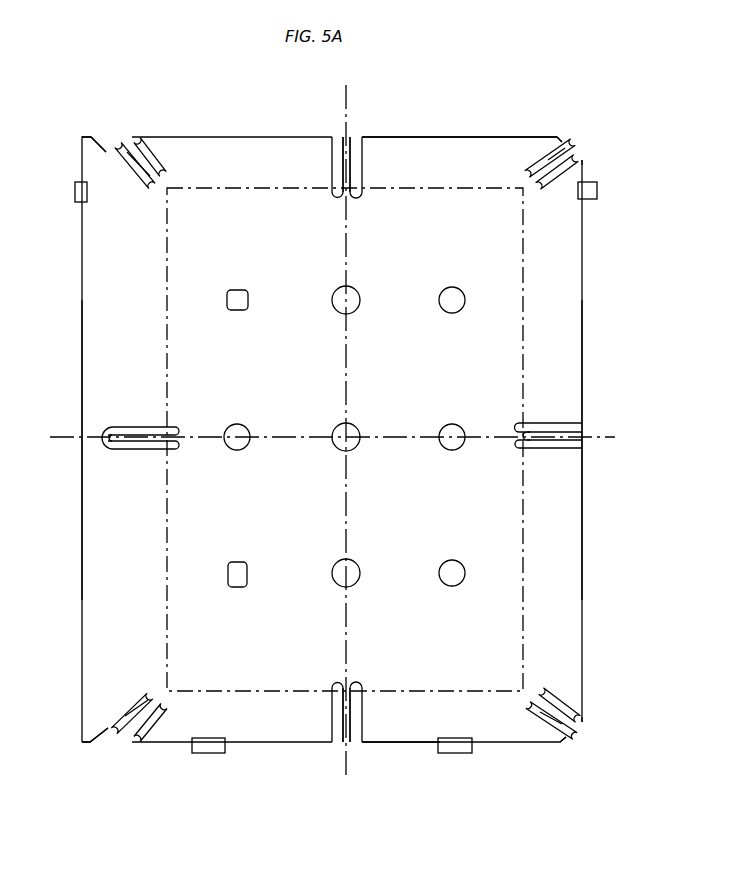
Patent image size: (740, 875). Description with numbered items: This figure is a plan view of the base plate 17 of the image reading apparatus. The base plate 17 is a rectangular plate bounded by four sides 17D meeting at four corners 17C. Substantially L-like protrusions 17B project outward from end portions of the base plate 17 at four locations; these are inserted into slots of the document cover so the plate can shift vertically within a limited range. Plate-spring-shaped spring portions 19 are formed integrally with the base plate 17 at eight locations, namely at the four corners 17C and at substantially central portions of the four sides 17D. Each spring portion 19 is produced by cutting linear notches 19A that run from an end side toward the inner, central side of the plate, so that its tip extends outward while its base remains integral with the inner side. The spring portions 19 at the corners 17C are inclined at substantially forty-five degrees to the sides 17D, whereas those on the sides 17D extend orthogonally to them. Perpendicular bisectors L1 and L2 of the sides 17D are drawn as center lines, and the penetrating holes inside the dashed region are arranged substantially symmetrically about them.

The base plate 17 is at (250, 130).
The protrusions 17B is at (74, 193).
The corners 17C is at (86, 128).
The sides 17D is at (420, 137).
The spring portions 19 is at (128, 148).
The linear notches 19A is at (142, 144).
The perpendicular bisector L1 is at (500, 431).
The perpendicular bisector L2 is at (345, 215).